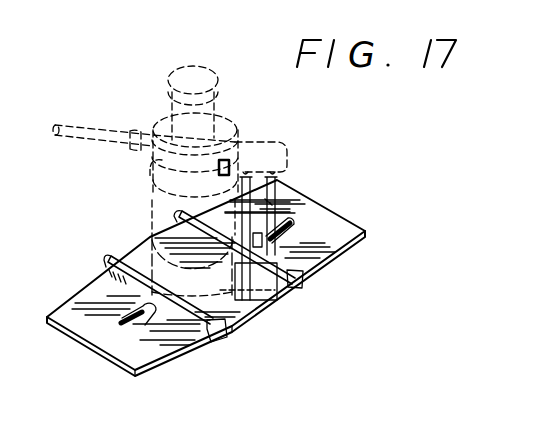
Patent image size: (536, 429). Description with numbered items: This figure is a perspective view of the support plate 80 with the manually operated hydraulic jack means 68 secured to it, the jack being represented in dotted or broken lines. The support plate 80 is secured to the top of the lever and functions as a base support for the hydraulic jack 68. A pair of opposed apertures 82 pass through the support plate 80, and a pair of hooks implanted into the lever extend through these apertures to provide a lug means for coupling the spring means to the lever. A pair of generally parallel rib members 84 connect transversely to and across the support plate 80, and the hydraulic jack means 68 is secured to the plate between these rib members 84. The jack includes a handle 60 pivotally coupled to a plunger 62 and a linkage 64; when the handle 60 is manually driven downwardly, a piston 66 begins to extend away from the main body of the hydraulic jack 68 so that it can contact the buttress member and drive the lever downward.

The handle 60 is at (108, 128).
The plunger 62 is at (152, 187).
The linkage 64 is at (285, 182).
The piston 66 is at (193, 80).
The hydraulic jack means 68 is at (150, 170).
The support plate 80 is at (383, 216).
The apertures 82 is at (292, 221).
The rib members 84 is at (210, 330).